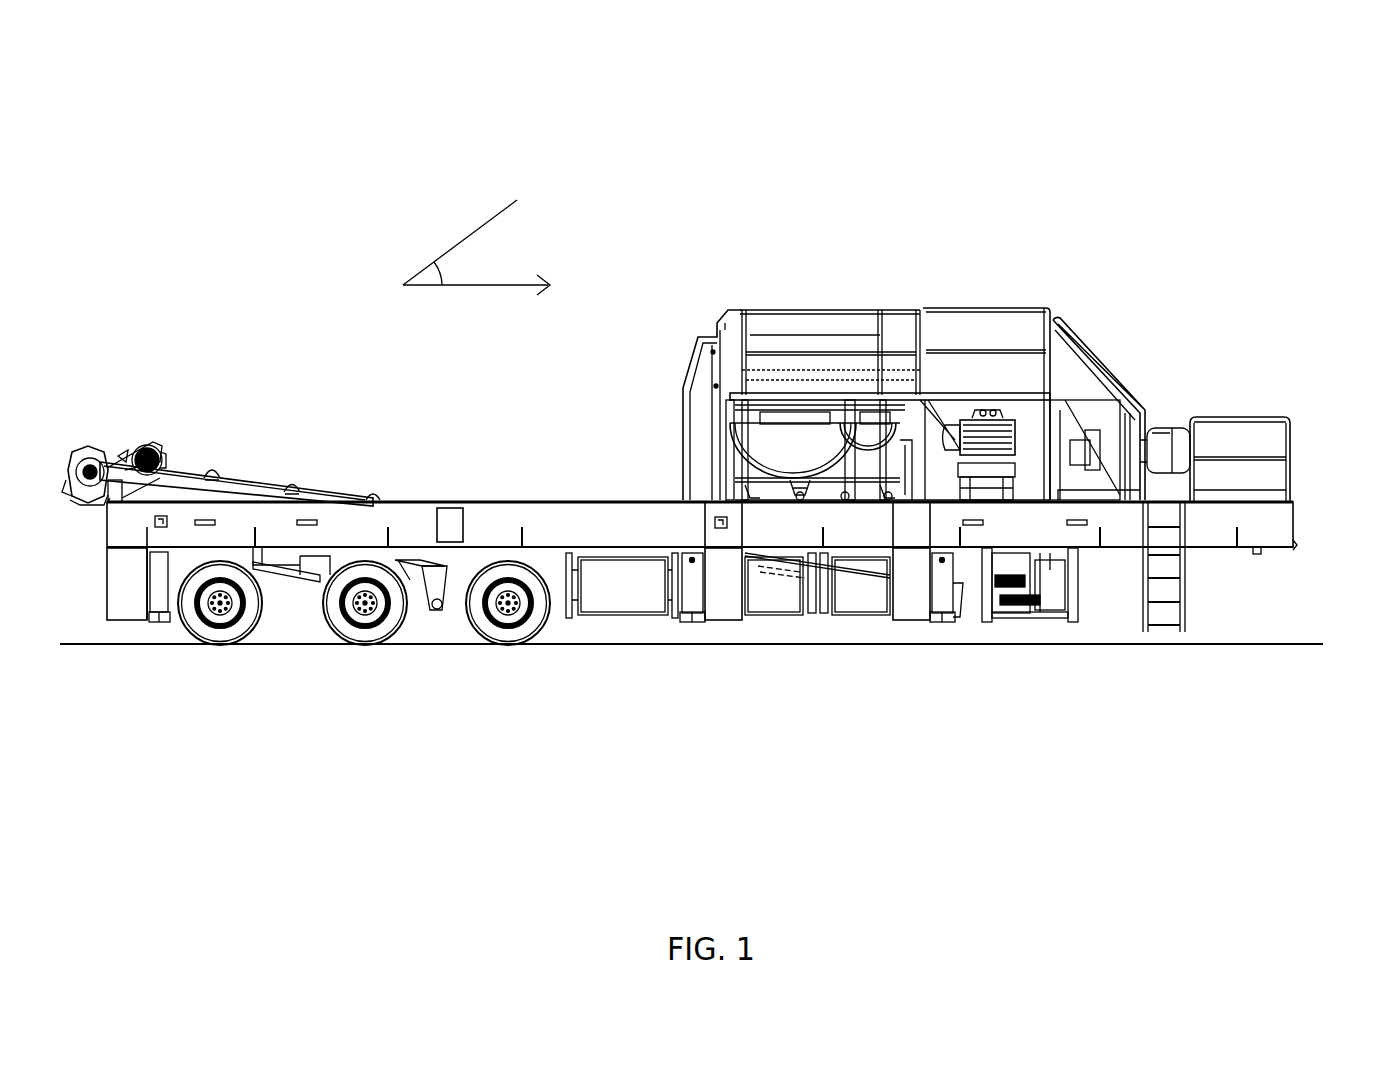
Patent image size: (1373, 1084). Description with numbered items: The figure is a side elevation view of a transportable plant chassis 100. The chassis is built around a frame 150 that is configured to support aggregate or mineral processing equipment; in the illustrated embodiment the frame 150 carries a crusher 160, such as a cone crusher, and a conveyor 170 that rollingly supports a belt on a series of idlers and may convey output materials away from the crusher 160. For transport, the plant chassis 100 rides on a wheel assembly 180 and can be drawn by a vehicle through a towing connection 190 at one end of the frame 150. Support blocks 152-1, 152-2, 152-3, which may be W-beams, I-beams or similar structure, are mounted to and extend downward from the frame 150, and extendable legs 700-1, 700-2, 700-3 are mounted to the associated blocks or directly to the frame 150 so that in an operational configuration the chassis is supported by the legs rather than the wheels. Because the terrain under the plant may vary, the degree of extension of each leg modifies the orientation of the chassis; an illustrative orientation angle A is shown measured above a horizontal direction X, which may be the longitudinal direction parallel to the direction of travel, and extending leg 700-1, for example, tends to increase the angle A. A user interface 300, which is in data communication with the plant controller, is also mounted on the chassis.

The plant chassis 100 is at (80, 123).
The frame 150 is at (635, 498).
The support block 152-1 is at (912, 621).
The support block 152-2 is at (722, 621).
The support block 152-3 is at (127, 621).
The crusher 160 is at (830, 270).
The conveyor 170 is at (287, 447).
The wheel assembly 180 is at (440, 713).
The towing connection 190 is at (1257, 554).
The user interface 300 is at (467, 528).
The extendable leg 700-1 is at (943, 630).
The extendable leg 700-2 is at (693, 626).
The extendable leg 700-3 is at (162, 625).
The orientation angle A is at (460, 242).
The horizontal direction X is at (481, 295).